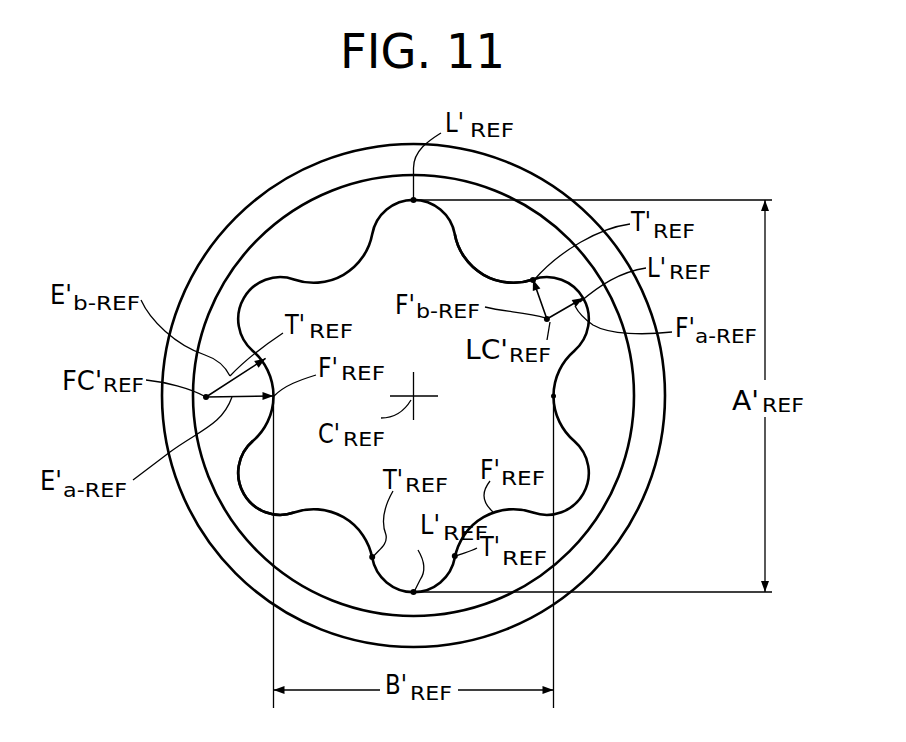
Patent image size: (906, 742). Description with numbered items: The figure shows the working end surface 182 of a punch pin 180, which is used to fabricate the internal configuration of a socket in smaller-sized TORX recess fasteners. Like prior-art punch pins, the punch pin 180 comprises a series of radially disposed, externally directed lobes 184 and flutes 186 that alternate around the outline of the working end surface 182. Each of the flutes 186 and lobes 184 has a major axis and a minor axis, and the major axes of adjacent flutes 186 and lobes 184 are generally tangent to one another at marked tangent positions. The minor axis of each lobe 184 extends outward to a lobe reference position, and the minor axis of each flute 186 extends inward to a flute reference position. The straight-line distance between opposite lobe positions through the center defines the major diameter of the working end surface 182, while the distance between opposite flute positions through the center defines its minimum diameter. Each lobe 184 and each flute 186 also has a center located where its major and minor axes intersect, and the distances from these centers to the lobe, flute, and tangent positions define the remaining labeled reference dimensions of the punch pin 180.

The punch pin 180 is at (560, 171).
The working end surface 182 is at (363, 290).
The lobes 184 is at (243, 494).
The flutes 186 is at (482, 273).